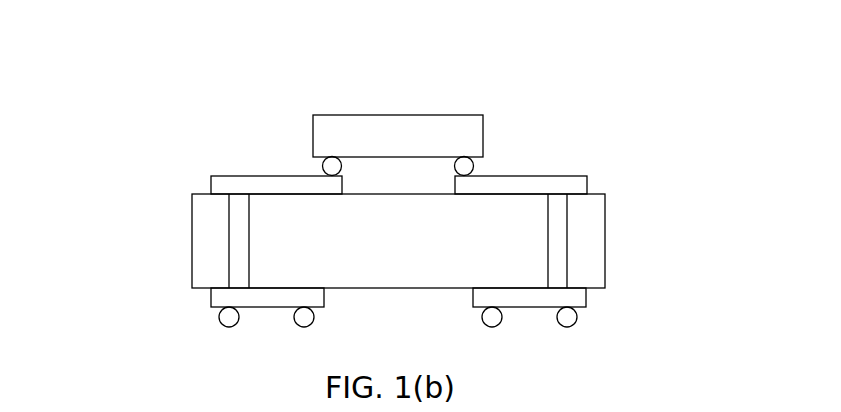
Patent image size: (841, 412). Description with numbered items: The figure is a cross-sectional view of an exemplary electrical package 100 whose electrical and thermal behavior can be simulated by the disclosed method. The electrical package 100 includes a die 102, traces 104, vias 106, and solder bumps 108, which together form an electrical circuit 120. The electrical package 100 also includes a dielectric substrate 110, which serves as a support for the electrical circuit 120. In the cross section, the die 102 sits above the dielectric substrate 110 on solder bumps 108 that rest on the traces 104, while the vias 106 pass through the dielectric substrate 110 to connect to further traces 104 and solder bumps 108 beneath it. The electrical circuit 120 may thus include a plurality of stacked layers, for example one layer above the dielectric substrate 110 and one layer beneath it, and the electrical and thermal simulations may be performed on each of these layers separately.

The electrical package 100 is at (420, 46).
The die 102 is at (398, 136).
The traces 104 is at (567, 185).
The vias 106 is at (240, 232).
The solder bumps 108 is at (323, 163).
The dielectric substrate 110 is at (585, 260).
The electrical circuit 120 is at (543, 133).